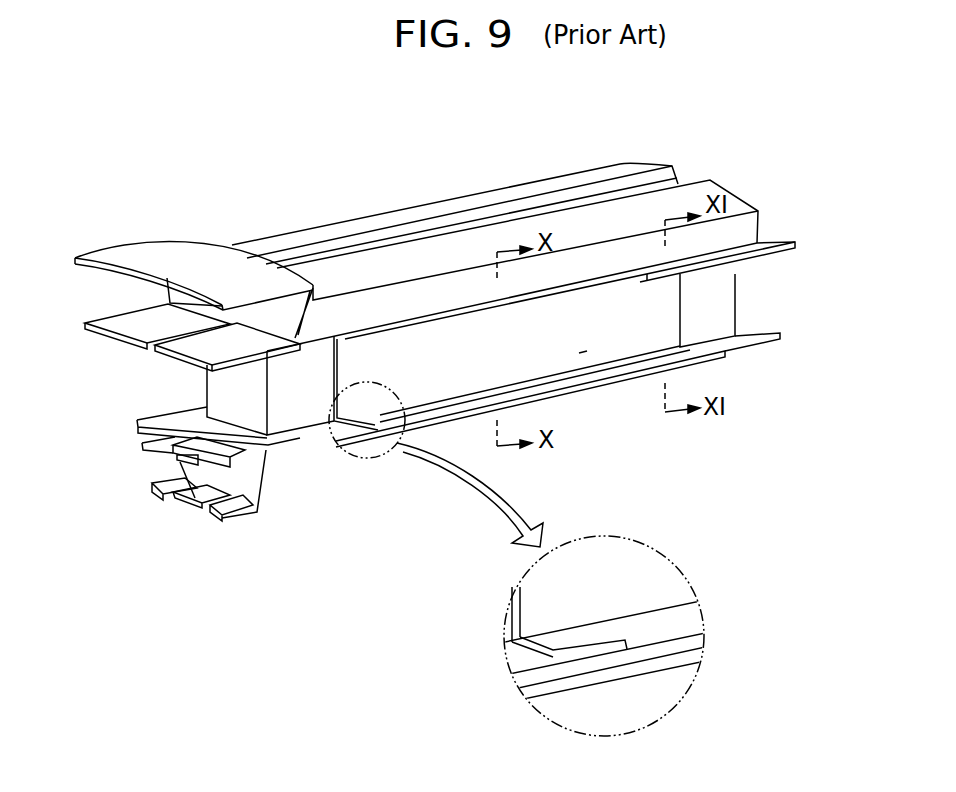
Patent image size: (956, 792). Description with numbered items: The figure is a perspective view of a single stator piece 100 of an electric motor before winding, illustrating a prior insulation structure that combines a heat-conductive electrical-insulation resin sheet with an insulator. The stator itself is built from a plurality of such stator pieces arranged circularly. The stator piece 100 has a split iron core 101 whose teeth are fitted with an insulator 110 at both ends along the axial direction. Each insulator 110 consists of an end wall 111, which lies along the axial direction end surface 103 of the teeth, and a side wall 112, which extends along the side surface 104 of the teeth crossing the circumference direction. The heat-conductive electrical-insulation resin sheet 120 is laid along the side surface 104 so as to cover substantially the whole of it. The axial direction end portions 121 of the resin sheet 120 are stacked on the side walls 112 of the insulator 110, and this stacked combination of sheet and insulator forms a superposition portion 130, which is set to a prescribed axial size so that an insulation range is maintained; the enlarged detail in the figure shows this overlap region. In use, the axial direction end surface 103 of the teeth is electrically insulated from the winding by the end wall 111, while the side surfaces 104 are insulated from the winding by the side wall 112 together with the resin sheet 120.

The stator piece 100 is at (516, 178).
The split iron core 101 is at (277, 233).
The axial direction end surface 103 is at (223, 395).
The side surface 104 is at (583, 352).
The insulator 110 is at (140, 245).
The end wall 111 is at (213, 380).
The side wall 112 is at (725, 288).
The heat-conductive electrical-insulation resin sheet 120 is at (538, 362).
The axial direction end portion 121 is at (667, 322).
The superposition portion 130 is at (370, 355).